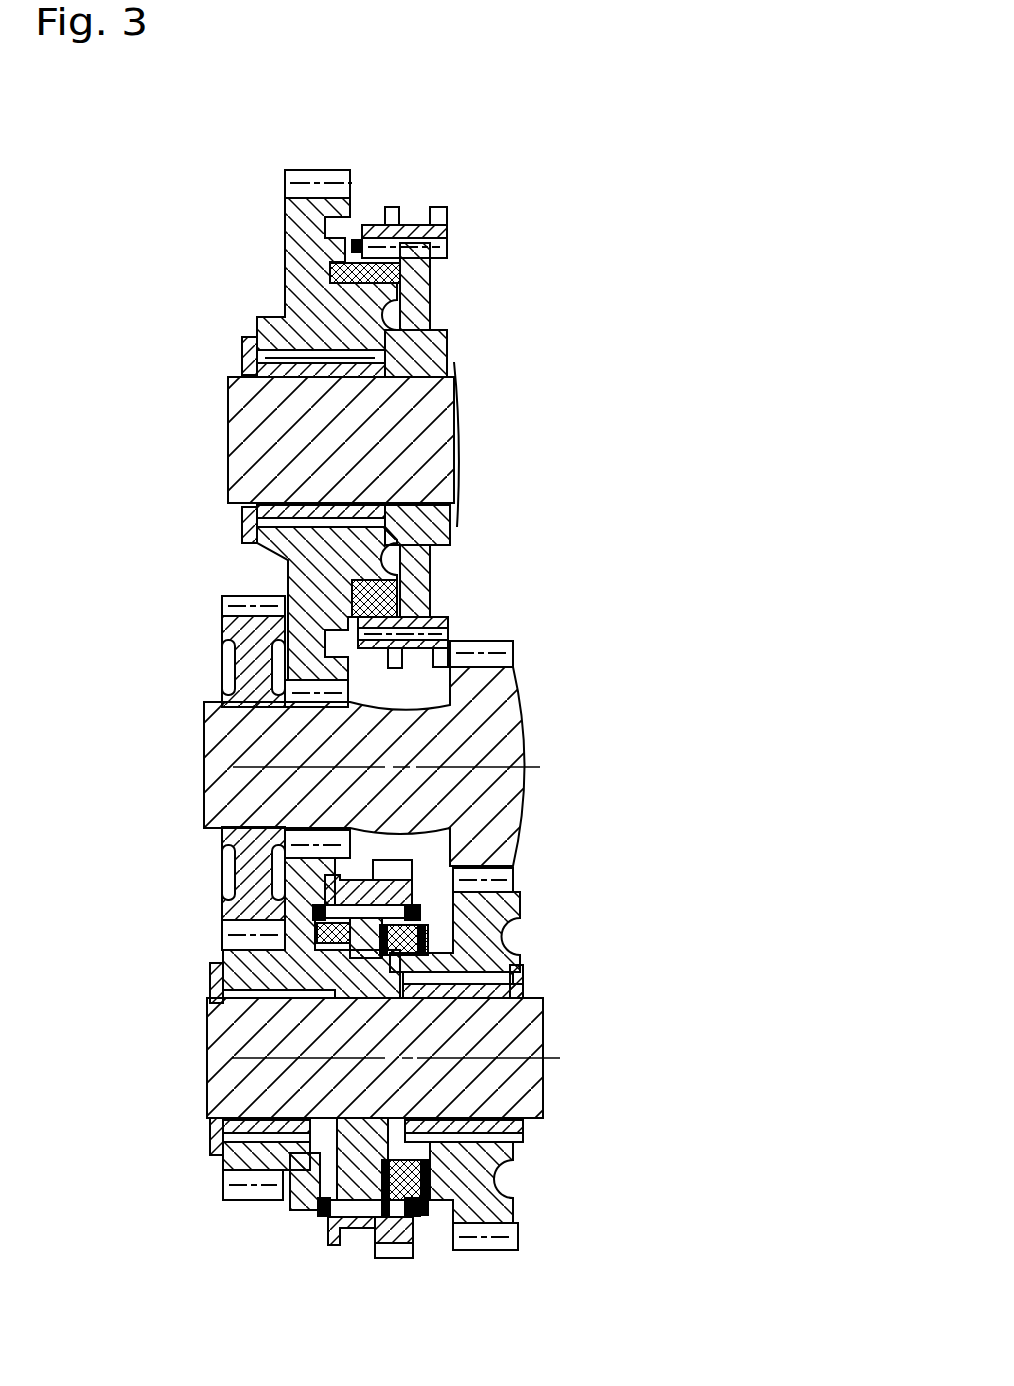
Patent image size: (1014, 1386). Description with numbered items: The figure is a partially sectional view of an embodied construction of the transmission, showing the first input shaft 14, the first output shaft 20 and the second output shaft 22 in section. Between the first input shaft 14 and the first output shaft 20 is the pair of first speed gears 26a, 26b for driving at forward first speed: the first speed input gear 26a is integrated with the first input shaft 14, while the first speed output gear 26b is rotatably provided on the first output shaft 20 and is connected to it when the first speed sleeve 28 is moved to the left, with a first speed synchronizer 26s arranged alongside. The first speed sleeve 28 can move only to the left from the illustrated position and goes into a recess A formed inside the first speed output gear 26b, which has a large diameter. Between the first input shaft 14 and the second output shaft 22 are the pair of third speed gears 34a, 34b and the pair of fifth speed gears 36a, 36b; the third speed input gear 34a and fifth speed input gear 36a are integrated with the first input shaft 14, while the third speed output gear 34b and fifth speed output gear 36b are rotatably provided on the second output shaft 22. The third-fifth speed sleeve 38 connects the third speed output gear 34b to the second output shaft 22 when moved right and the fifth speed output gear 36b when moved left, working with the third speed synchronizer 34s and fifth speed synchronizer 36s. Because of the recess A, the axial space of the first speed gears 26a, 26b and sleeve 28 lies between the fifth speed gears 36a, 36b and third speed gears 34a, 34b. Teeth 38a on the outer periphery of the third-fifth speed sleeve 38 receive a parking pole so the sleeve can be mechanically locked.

The first input shaft 14 is at (500, 756).
The first output shaft 20 is at (455, 427).
The second output shaft 22 is at (500, 1045).
The first speed input gear 26a is at (320, 840).
The first speed output gear 26b is at (285, 208).
The first speed synchronizer 26s is at (430, 274).
The first speed sleeve 28 is at (408, 227).
The third speed input gear 34a is at (495, 857).
The third speed output gear 34b is at (490, 1190).
The third speed synchronizer 34s is at (425, 1205).
The fifth speed input gear 36a is at (228, 641).
The fifth speed output gear 36b is at (225, 955).
The fifth speed synchronizer 36s is at (320, 1215).
The 3-5 speed sleeve 38 is at (365, 1230).
The teeth 38a is at (395, 1258).
The recess A is at (337, 228).